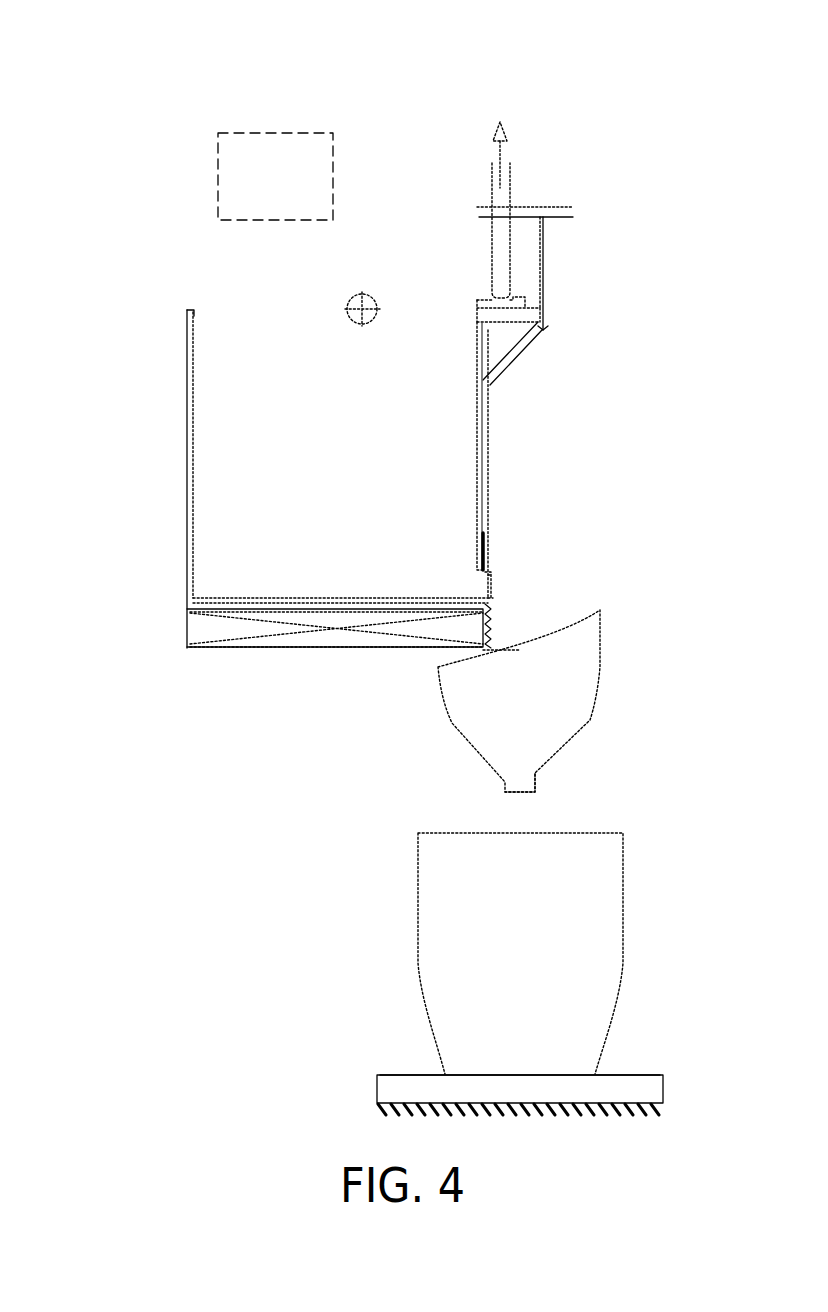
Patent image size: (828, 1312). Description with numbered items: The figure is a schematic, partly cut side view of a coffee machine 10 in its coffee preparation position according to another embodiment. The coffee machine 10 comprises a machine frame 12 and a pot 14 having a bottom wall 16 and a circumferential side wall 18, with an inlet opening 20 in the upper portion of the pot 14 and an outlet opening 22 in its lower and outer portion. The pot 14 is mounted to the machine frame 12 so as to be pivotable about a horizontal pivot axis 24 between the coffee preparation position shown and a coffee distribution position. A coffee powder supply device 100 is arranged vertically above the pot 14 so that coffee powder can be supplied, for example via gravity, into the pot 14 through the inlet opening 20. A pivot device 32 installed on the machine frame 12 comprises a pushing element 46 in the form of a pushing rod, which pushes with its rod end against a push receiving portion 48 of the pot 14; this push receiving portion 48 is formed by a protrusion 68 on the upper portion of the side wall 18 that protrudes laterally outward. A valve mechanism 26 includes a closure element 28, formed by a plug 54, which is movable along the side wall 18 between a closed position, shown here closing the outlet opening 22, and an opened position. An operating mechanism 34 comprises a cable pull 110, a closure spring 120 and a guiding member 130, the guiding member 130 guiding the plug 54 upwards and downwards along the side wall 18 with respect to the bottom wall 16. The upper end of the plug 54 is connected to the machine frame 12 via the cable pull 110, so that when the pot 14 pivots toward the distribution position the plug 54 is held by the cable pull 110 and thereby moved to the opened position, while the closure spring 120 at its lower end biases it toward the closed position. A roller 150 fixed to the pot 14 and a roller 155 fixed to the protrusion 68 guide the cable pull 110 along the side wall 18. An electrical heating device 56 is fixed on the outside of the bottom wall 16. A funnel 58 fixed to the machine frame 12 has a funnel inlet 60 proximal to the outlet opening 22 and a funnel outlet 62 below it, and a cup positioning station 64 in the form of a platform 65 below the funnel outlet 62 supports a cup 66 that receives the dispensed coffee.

The coffee machine 10 is at (265, 82).
The coffee powder supply device 100 is at (240, 156).
The machine frame 12 is at (557, 212).
The pot 14 is at (188, 310).
The bottom wall 16 is at (192, 603).
The circumferential side wall 18 is at (187, 436).
The inlet opening 20 is at (258, 303).
The outlet opening 22 is at (487, 590).
The pivot axis 24 is at (357, 322).
The valve mechanism 26 is at (505, 582).
The closure element 28 is at (493, 592).
The pivot device 32 is at (530, 175).
The operating mechanism 34 is at (503, 452).
The pushing element 46 is at (497, 258).
The push receiving portion 48 is at (478, 300).
The plug 54 is at (486, 578).
The electrical heating device 56 is at (226, 627).
The funnel 58 is at (580, 680).
The funnel inlet 60 is at (475, 655).
The funnel outlet 62 is at (524, 782).
The cup positioning station 64 is at (362, 1072).
The platform 65 is at (633, 1080).
The cup 66 is at (426, 936).
The protrusion 68 is at (500, 316).
The cable pull 110 is at (545, 265).
The closure spring 120 is at (493, 622).
The guiding member 130 is at (482, 545).
The roller 150 is at (486, 380).
The roller 155 is at (544, 330).